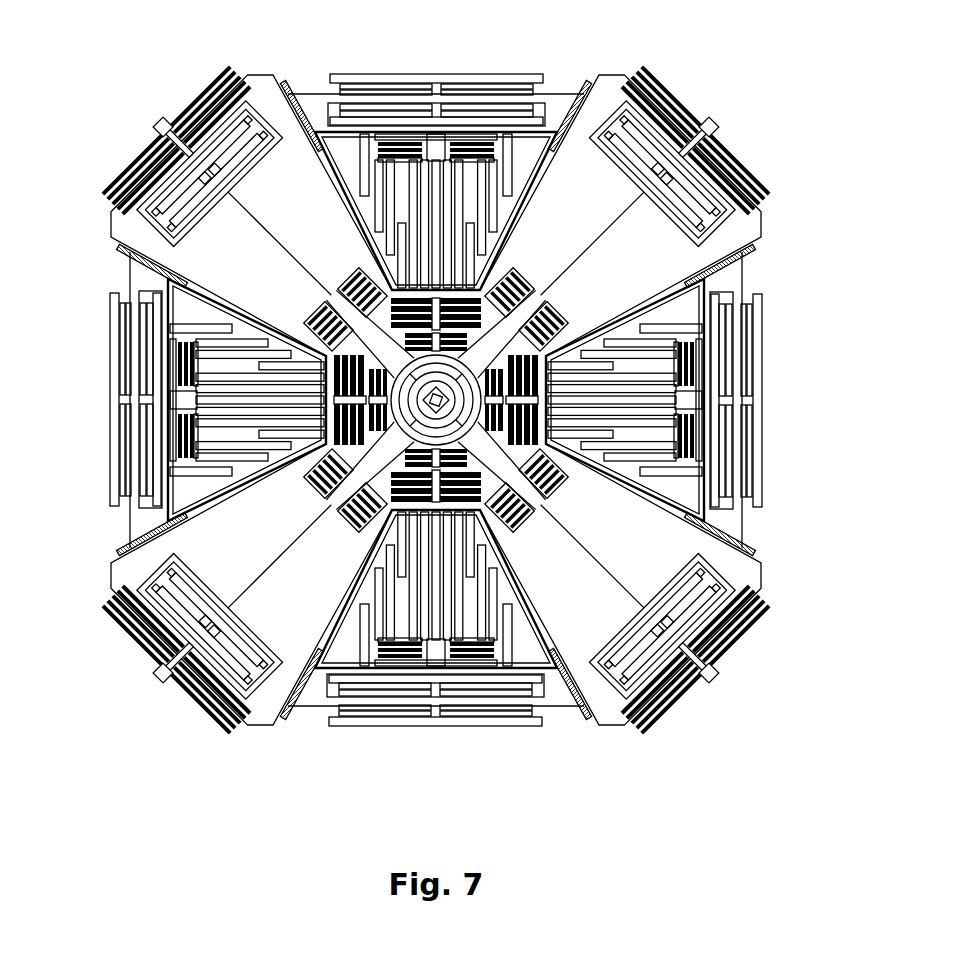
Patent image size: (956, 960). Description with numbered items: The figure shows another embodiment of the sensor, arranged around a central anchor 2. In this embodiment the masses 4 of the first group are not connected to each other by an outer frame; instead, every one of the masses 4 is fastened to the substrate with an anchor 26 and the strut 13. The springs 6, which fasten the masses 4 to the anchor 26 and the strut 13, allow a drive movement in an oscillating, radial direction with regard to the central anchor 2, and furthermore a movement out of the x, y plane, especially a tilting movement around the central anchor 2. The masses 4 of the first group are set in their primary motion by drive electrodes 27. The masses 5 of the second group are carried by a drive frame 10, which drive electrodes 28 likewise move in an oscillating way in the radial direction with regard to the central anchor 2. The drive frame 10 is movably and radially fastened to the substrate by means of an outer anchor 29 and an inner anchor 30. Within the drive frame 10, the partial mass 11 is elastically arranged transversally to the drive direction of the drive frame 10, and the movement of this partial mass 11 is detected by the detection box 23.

The central anchor 2 is at (435, 397).
The masses of the first group 4 is at (162, 168).
The masses of the second group 5 is at (568, 80).
The springs 6 is at (218, 705).
The drive frame 10 is at (555, 697).
The partial mass 11 is at (520, 647).
The strut 13 is at (352, 445).
The detection box 23 is at (401, 627).
The anchor 26 is at (180, 655).
The drive electrodes 27 is at (713, 645).
The drive electrodes 28 is at (468, 707).
The outer anchor 29 is at (437, 657).
The inner anchor 30 is at (465, 447).